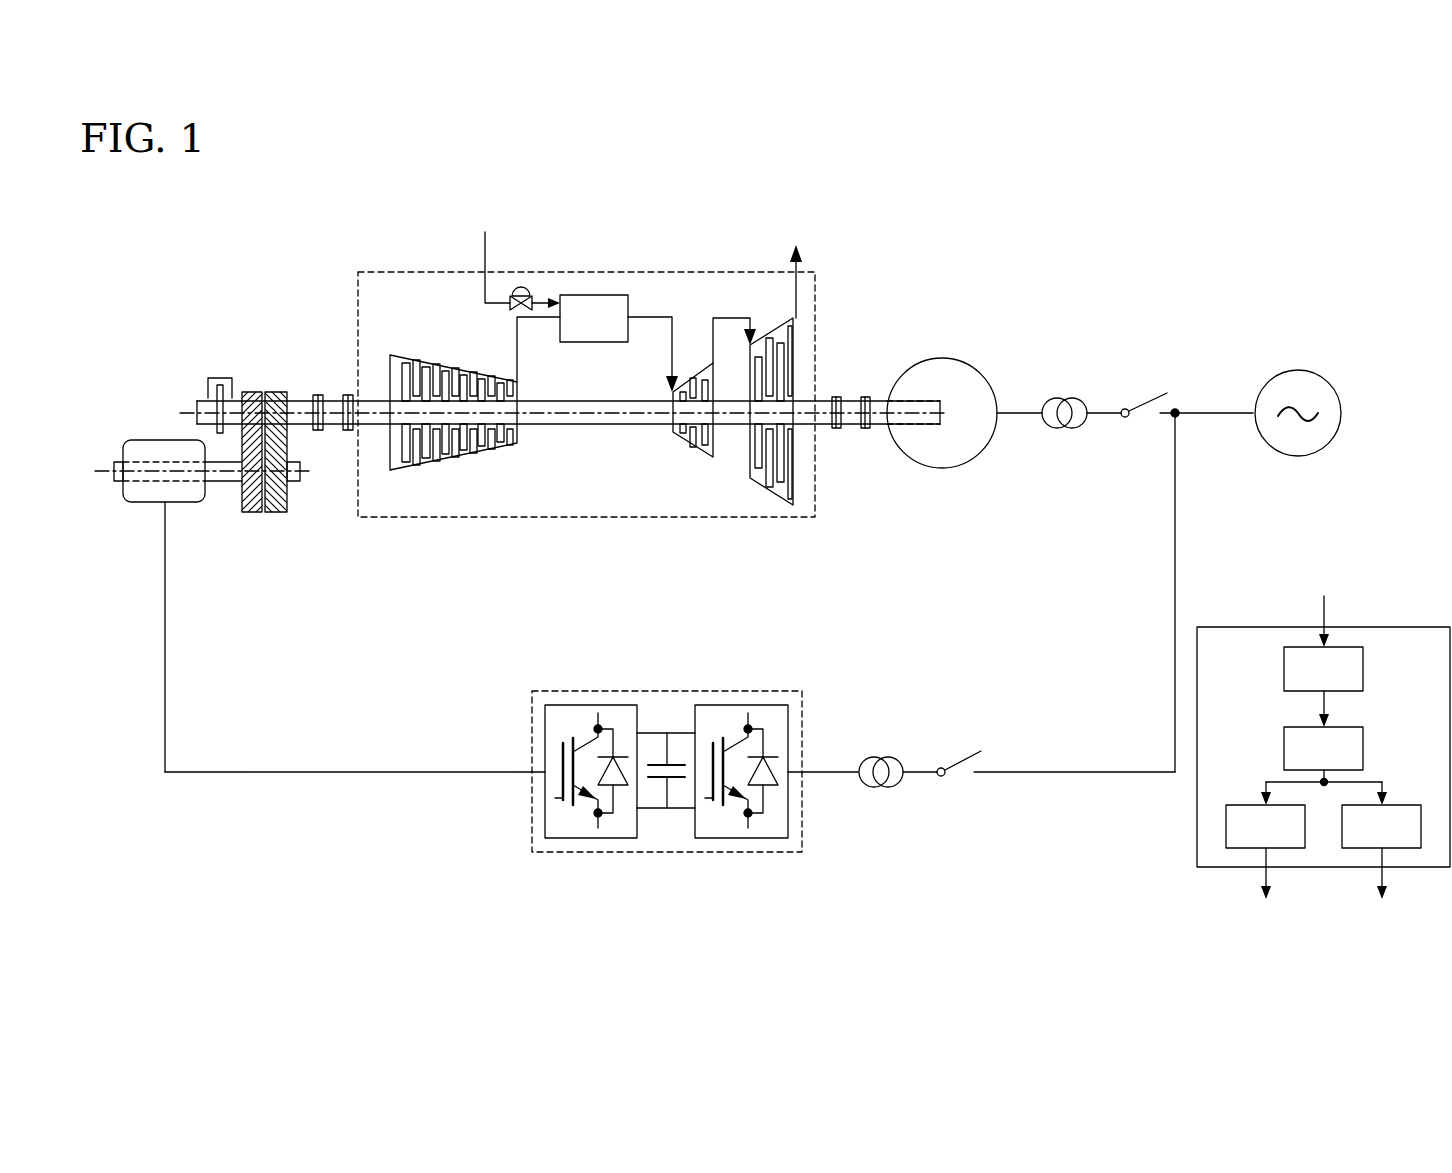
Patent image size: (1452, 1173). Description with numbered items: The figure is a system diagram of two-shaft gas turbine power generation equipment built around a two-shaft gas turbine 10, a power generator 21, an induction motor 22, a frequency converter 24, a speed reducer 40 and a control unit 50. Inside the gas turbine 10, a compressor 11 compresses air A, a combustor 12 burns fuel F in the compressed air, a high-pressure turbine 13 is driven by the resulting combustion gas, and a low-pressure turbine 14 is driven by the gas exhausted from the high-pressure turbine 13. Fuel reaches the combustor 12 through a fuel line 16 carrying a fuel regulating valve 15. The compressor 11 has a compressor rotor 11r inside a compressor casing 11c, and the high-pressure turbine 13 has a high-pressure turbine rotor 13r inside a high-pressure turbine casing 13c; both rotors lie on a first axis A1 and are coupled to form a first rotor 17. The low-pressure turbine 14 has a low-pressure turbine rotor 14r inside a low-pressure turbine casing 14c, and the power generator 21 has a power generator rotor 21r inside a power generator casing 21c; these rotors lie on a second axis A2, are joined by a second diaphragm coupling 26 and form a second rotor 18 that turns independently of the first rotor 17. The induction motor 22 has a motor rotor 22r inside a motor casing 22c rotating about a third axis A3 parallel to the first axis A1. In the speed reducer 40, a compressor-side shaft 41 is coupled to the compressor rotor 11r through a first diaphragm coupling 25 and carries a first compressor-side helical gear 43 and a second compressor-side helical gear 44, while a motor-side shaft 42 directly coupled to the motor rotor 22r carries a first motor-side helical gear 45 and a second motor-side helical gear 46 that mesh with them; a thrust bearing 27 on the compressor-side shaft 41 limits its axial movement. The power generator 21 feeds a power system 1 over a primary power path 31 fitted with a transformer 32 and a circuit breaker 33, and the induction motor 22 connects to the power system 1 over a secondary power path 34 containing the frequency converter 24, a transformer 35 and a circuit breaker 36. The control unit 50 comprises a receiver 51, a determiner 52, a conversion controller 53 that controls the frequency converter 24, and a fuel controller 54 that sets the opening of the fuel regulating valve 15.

The power system 1 is at (1294, 372).
The two-shaft gas turbine 10 is at (792, 528).
The compressor 11 is at (437, 486).
The compressor casing 11c is at (447, 460).
The compressor rotor 11r is at (391, 470).
The combustor 12 is at (597, 295).
The high-pressure turbine 13 is at (687, 307).
The high-pressure turbine casing 13c is at (686, 390).
The high-pressure turbine rotor 13r is at (715, 405).
The low-pressure turbine 14 is at (801, 331).
The low-pressure turbine casing 14c is at (757, 343).
The low-pressure turbine rotor 14r is at (790, 398).
The fuel regulating valve 15 is at (521, 287).
The fuel line 16 is at (485, 250).
The first rotor 17 is at (558, 425).
The second rotor 18 is at (803, 401).
The power generator 21 is at (947, 361).
The power generator casing 21c is at (962, 358).
The power generator rotor 21r is at (915, 360).
The induction motor 22 is at (145, 397).
The motor casing 22c is at (160, 440).
The motor rotor 22r is at (135, 460).
The frequency converter 24 is at (636, 852).
The first diaphragm coupling 25 is at (343, 431).
The second diaphragm coupling 26 is at (850, 430).
The thrust bearing 27 is at (220, 378).
The primary power path 31 is at (1018, 415).
The transformer 32 is at (1055, 385).
The circuit breaker 33 is at (1143, 397).
The secondary power path 34 is at (831, 775).
The transformer 35 is at (873, 742).
The circuit breaker 36 is at (963, 752).
The speed reducer 40 is at (267, 434).
The compressor-side shaft 41 is at (320, 395).
The motor-side shaft 42 is at (292, 482).
The first compressor-side helical gear 43 is at (275, 392).
The second compressor-side helical gear 44 is at (252, 392).
The first motor-side helical gear 45 is at (272, 513).
The second motor-side helical gear 46 is at (247, 513).
The control unit 50 is at (1324, 747).
The receiver 51 is at (1350, 647).
The determiner 52 is at (1364, 734).
The conversion controller 53 is at (1401, 805).
The fuel controller 54 is at (1243, 805).
The air A is at (390, 345).
The fuel F is at (485, 217).
The first axis A1 is at (615, 425).
The second axis A2 is at (930, 413).
The third axis A3 is at (102, 473).